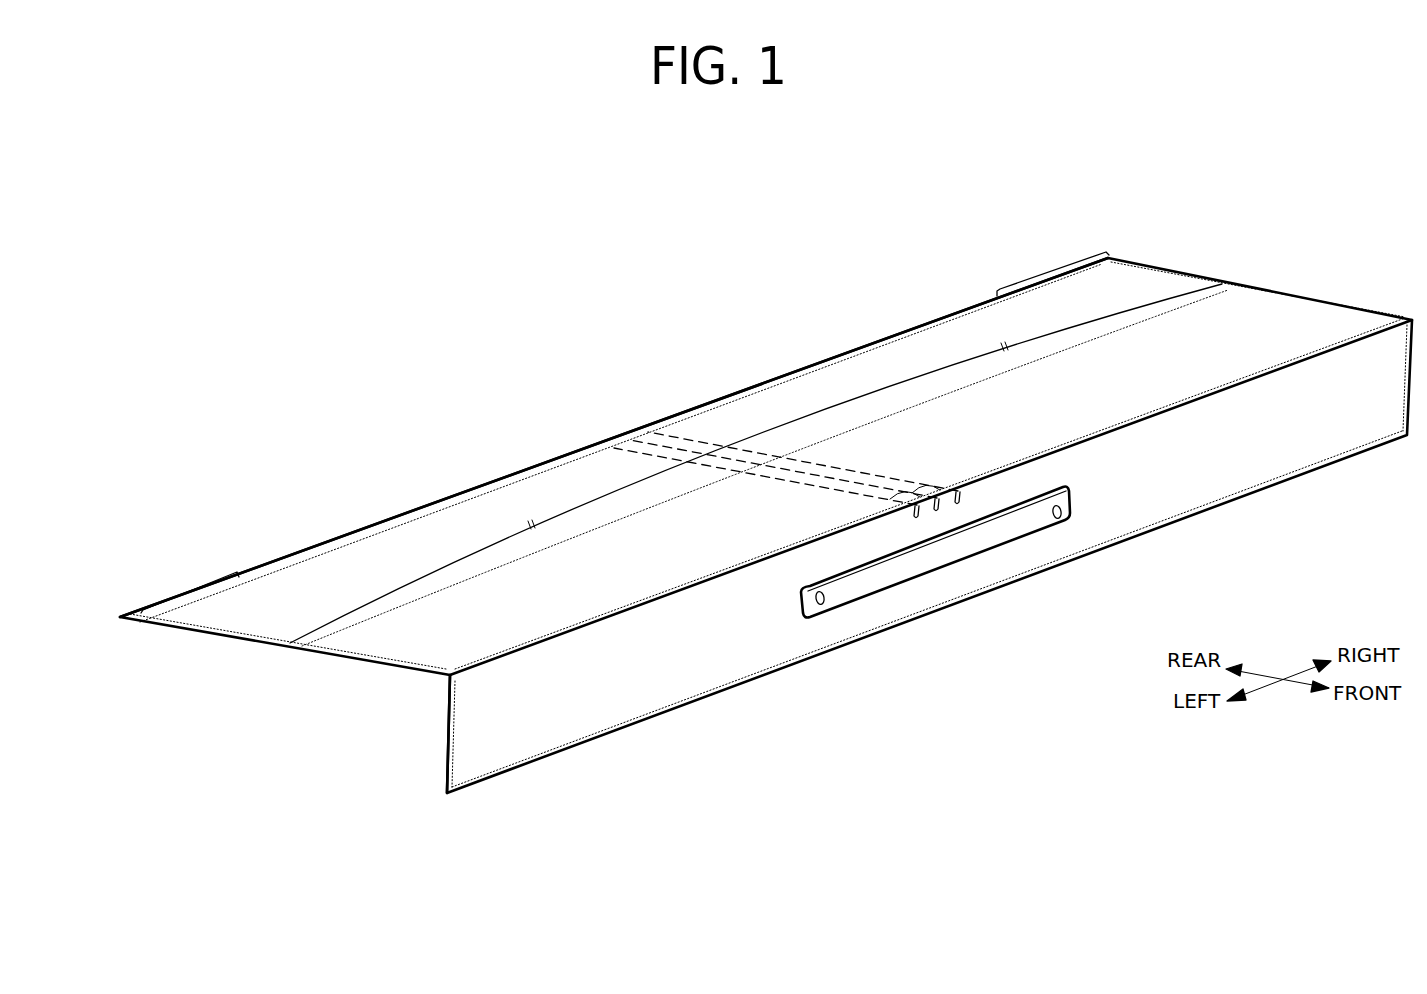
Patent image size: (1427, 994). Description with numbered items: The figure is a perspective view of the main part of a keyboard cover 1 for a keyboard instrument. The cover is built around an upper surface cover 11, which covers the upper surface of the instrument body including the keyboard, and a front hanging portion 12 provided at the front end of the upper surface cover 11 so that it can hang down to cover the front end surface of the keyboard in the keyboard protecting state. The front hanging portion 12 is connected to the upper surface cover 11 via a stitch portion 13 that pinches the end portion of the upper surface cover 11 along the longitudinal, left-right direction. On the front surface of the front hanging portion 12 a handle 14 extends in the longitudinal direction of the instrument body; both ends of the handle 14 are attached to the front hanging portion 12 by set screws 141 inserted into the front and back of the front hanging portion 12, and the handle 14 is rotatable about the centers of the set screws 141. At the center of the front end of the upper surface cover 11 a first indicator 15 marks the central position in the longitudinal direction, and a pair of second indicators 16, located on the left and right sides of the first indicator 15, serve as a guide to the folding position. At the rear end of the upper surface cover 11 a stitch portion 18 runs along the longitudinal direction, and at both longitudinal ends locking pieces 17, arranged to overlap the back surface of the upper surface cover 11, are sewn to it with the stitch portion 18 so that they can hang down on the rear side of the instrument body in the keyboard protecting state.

The keyboard cover 1 is at (1256, 190).
The upper surface cover 11 is at (1280, 307).
The front hanging portion 12 is at (1352, 425).
The stitch portion 13 is at (612, 623).
The handle 14 is at (926, 588).
The set screws 141 is at (820, 606).
The first indicator 15 is at (936, 492).
The second indicators 16 is at (957, 489).
The locking pieces 17 is at (157, 602).
The stitch portion 18 is at (408, 513).